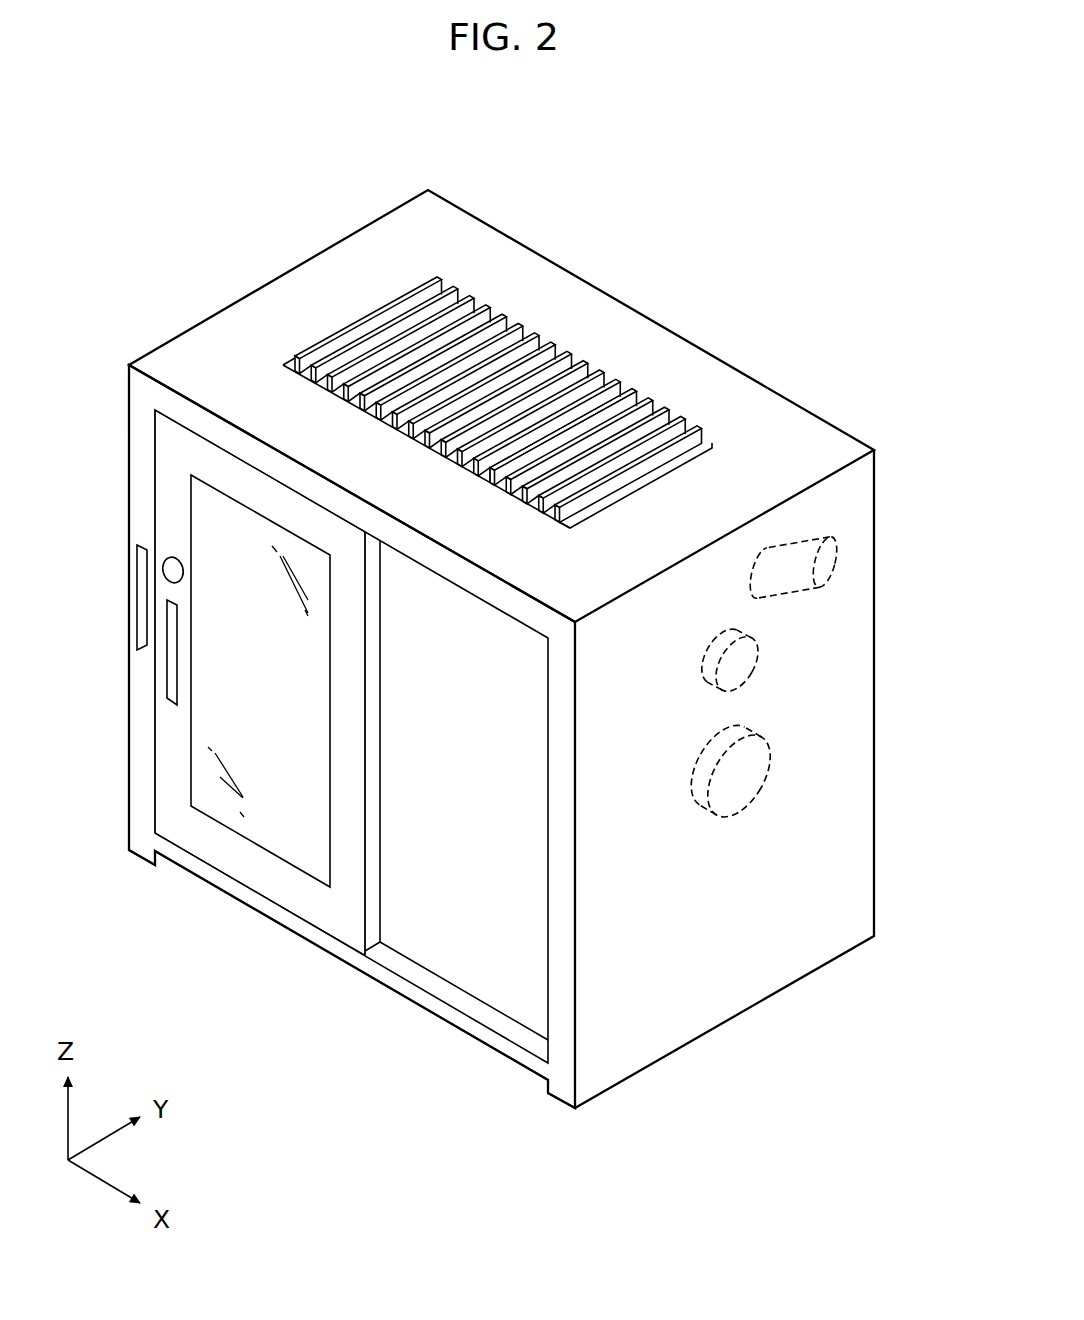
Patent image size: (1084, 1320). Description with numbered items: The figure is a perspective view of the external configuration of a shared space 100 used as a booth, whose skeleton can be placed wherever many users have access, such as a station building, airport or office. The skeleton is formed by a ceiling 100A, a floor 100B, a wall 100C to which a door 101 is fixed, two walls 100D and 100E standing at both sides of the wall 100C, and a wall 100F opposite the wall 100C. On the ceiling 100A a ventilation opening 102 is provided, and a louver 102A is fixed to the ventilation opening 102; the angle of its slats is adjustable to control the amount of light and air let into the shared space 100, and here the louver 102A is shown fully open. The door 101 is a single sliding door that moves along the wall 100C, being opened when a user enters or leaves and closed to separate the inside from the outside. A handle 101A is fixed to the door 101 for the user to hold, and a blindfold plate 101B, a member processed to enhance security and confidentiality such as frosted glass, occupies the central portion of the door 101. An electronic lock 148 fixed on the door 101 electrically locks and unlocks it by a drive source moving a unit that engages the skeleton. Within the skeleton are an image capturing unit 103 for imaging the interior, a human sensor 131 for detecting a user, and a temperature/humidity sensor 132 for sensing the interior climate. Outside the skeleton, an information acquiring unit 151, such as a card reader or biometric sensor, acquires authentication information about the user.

The shared space 100 is at (250, 192).
The ceiling 100A is at (393, 235).
The floor 100B is at (405, 983).
The wall 100C is at (520, 995).
The wall 100D is at (751, 962).
The wall 100E is at (181, 321).
The wall 100F is at (807, 393).
The door 101 is at (173, 503).
The handle 101A is at (167, 663).
The blindfold plate 101B is at (277, 828).
The ventilation opening 102 is at (637, 363).
The louver 102A is at (542, 343).
The image capturing unit 103 is at (836, 555).
The human sensor 131 is at (768, 768).
The temperature/humidity sensor 132 is at (757, 655).
The electronic lock 148 is at (163, 573).
The information acquiring unit 151 is at (140, 600).